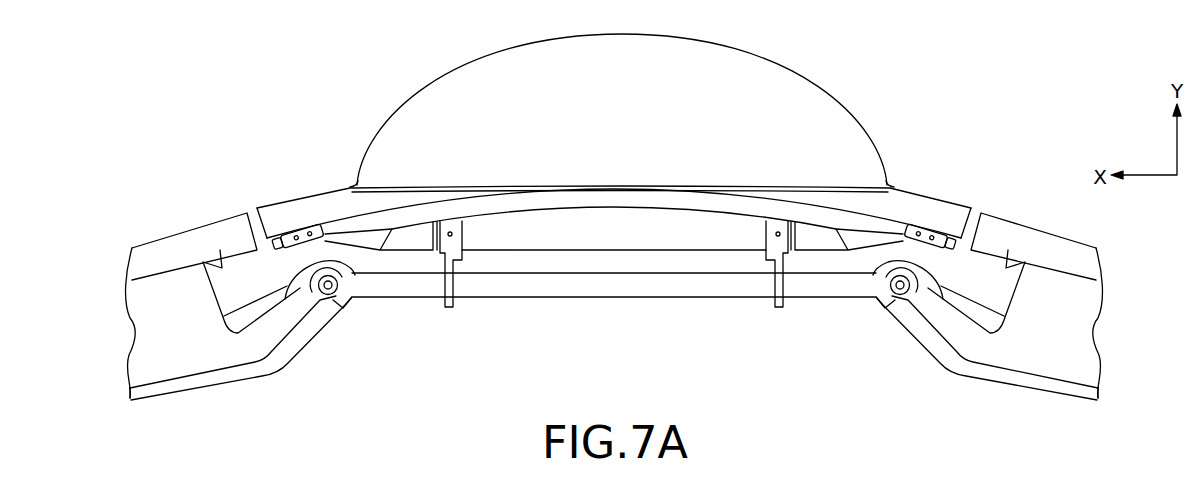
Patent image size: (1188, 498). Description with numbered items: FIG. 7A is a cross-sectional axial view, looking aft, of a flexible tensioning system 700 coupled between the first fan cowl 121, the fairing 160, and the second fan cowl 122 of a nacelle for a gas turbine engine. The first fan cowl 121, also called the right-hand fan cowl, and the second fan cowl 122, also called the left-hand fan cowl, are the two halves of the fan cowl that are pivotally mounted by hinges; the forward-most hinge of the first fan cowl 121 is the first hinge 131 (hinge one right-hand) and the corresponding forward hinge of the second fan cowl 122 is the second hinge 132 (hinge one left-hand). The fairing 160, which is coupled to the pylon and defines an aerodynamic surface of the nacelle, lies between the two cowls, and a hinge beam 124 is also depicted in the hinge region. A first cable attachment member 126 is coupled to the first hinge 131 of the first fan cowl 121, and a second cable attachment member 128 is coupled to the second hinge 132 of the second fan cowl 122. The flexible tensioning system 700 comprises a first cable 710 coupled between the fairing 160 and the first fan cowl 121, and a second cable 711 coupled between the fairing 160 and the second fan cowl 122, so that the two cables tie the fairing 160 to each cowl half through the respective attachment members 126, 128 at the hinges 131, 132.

The flexible tensioning system 700 is at (614, 238).
The first fan cowl 121 is at (177, 246).
The second fan cowl 122 is at (1020, 238).
The fairing 160 is at (312, 205).
The hinge beam 124 is at (600, 283).
The first cable attachment member 126 is at (333, 302).
The second cable attachment member 128 is at (889, 294).
The first hinge 131 is at (375, 325).
The right arm 132 is at (890, 327).
The first cable 710 is at (302, 245).
The second cable 711 is at (922, 258).